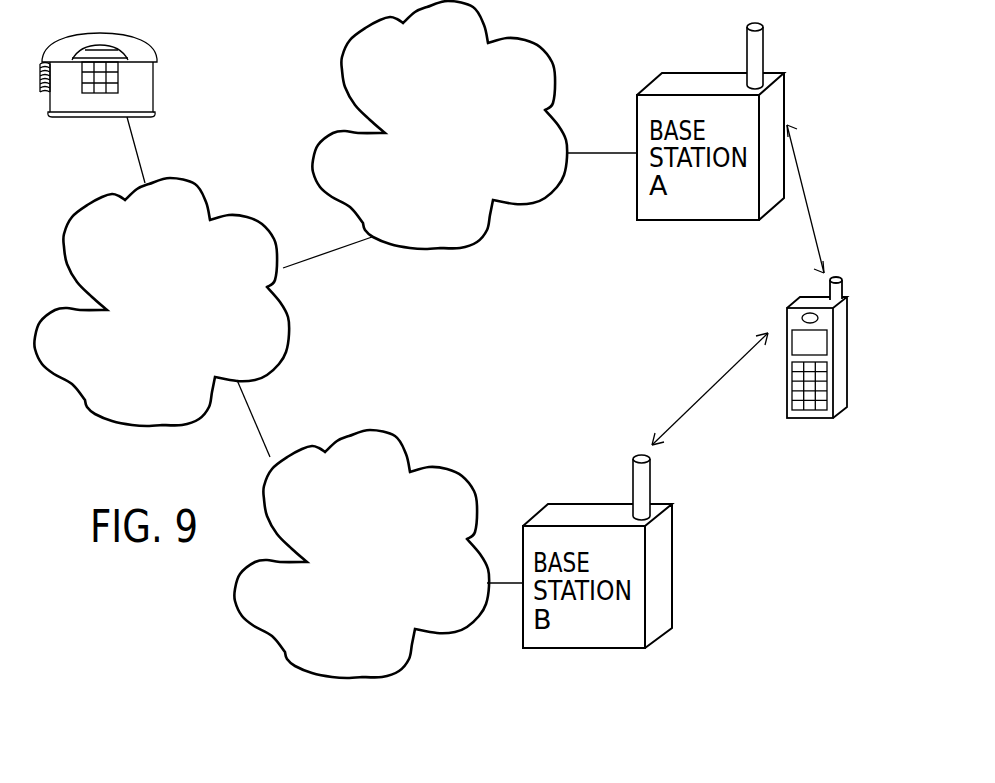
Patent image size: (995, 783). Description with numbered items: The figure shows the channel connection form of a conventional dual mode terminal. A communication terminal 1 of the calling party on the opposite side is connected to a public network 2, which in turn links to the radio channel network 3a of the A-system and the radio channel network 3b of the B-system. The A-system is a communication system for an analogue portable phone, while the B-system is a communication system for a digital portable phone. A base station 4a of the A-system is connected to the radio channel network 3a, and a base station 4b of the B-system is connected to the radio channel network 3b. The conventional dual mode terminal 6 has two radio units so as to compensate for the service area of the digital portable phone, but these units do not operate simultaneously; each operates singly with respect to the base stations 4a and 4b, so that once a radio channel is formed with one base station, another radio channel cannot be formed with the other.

The communication terminal 1 is at (153, 83).
The public network 2 is at (294, 328).
The radio channel network of the A-system 3a is at (520, 205).
The radio channel network of the B-system 3b is at (477, 498).
The base station of the A-system 4a is at (747, 47).
The base station of the B-system 4b is at (650, 477).
The dual mode terminal 6 is at (810, 418).